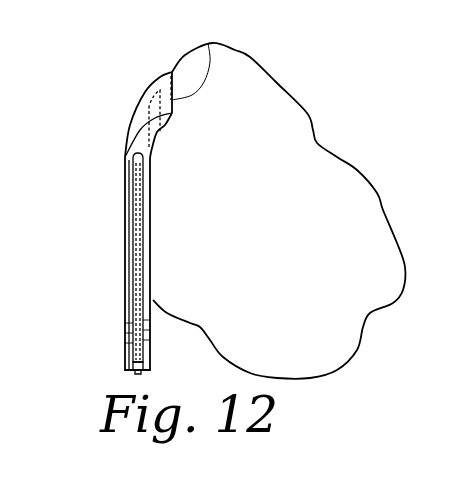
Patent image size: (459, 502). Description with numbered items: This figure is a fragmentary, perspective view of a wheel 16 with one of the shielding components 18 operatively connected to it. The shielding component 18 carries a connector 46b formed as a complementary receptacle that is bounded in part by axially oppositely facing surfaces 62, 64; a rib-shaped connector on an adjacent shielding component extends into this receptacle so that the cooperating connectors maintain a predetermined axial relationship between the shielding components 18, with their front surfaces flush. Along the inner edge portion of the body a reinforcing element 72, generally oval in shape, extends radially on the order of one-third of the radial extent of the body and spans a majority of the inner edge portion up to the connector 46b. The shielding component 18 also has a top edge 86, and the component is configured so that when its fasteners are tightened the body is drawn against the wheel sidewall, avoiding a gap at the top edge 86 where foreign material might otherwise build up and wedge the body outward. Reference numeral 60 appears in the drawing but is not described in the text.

The tissue / body 16 is at (302, 274).
The shielding component 18 is at (124, 208).
The connector 46b is at (135, 188).
The lumen 60 is at (134, 217).
The axially facing surface 62 is at (134, 235).
The axially facing surface 64 is at (133, 310).
The reinforcing element 72 is at (130, 278).
The top edge 86 is at (208, 43).